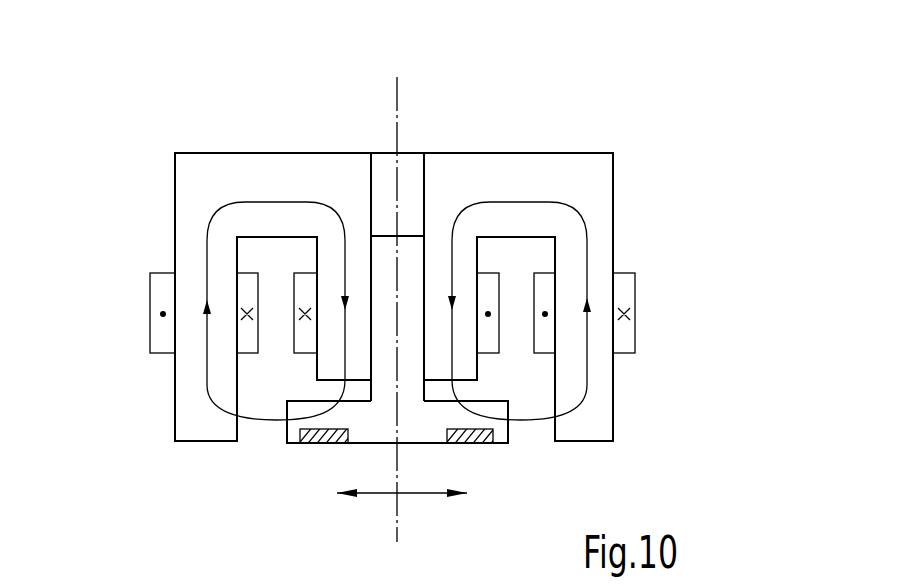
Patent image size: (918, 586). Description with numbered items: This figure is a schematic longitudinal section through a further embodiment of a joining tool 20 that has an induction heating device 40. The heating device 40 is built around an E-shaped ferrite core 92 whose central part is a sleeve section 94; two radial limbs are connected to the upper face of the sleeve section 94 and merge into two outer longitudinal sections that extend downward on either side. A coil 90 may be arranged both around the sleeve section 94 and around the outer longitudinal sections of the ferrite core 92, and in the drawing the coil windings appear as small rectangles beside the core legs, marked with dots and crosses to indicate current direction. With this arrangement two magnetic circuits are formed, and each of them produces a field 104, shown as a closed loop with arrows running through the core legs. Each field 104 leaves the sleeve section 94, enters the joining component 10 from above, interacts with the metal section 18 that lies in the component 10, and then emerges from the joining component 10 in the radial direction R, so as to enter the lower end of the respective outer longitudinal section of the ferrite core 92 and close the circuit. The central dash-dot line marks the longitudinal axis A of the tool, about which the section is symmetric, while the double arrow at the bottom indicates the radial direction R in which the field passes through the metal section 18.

The joining component 10 is at (443, 450).
The metal section 18 is at (320, 443).
The joining tool 20 is at (660, 125).
The induction heating device 40 is at (568, 148).
The coil 90 is at (163, 297).
The ferrite core 92 is at (598, 227).
The sleeve section 94 is at (435, 282).
The magnetic field 104 is at (243, 207).
The axis A is at (395, 117).
The radial direction R is at (405, 495).